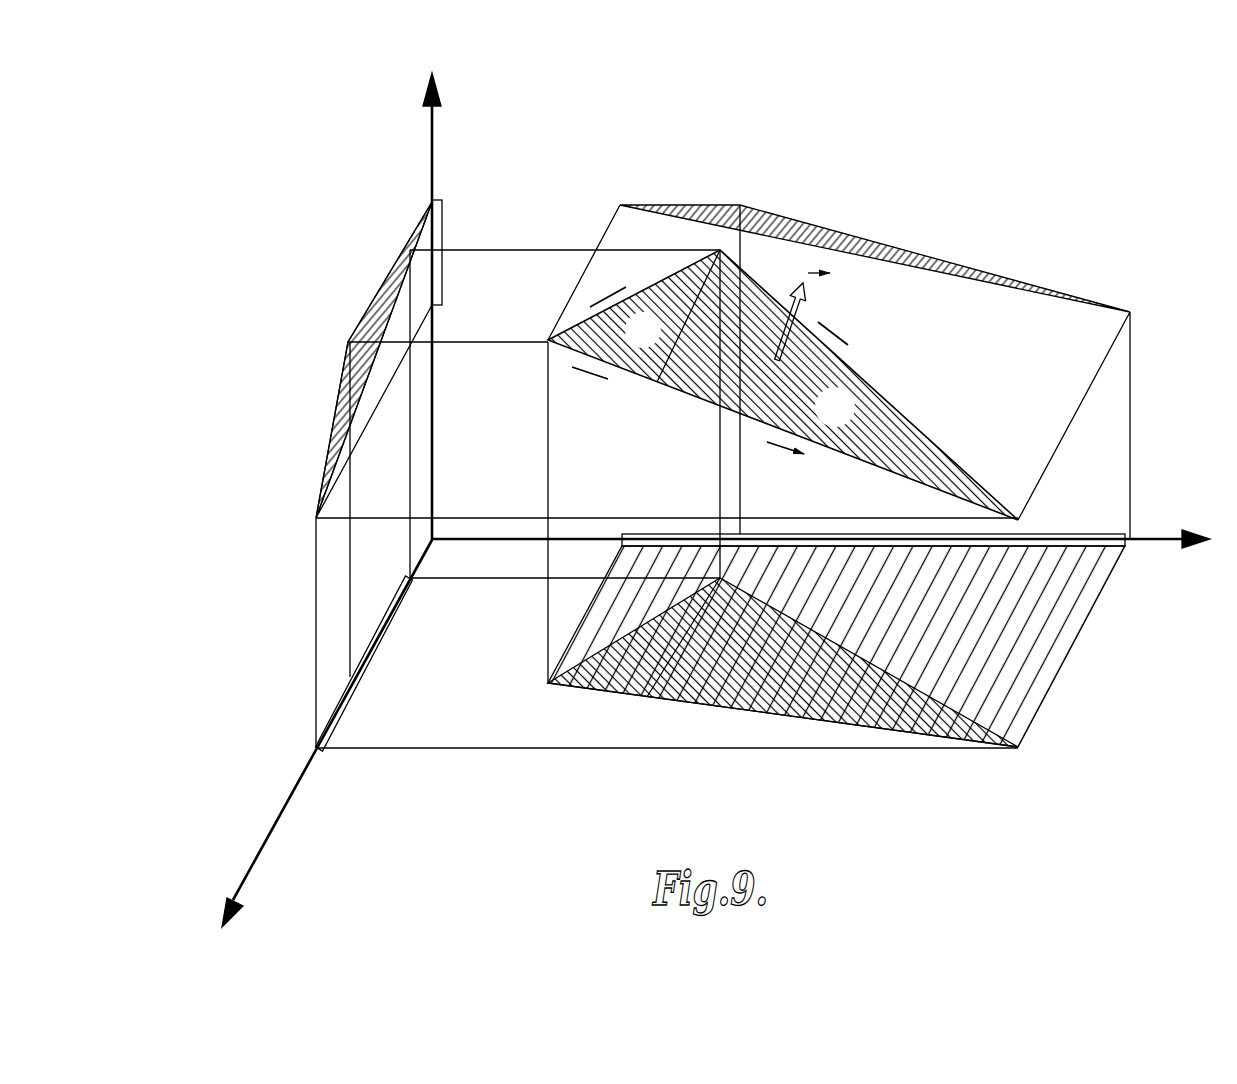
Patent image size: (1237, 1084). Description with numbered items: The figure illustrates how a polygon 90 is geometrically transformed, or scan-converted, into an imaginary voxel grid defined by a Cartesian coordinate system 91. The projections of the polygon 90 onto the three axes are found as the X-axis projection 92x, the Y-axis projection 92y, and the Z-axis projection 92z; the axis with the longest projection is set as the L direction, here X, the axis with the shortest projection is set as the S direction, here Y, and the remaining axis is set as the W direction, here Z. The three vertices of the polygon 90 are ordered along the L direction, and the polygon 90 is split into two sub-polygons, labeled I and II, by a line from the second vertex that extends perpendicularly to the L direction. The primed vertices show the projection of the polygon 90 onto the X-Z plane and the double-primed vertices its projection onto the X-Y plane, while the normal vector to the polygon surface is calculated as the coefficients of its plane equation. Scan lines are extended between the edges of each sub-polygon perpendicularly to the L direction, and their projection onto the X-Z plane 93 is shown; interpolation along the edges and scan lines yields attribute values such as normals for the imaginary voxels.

The polygon 90 is at (897, 403).
The Cartesian coordinate system 91 is at (494, 114).
The projection onto X axis 92x is at (1125, 548).
The projection onto Y axis 92y is at (441, 230).
The projection onto Z axis 92z is at (317, 752).
The projection of scan lines on X-Z plane 93 is at (1062, 684).